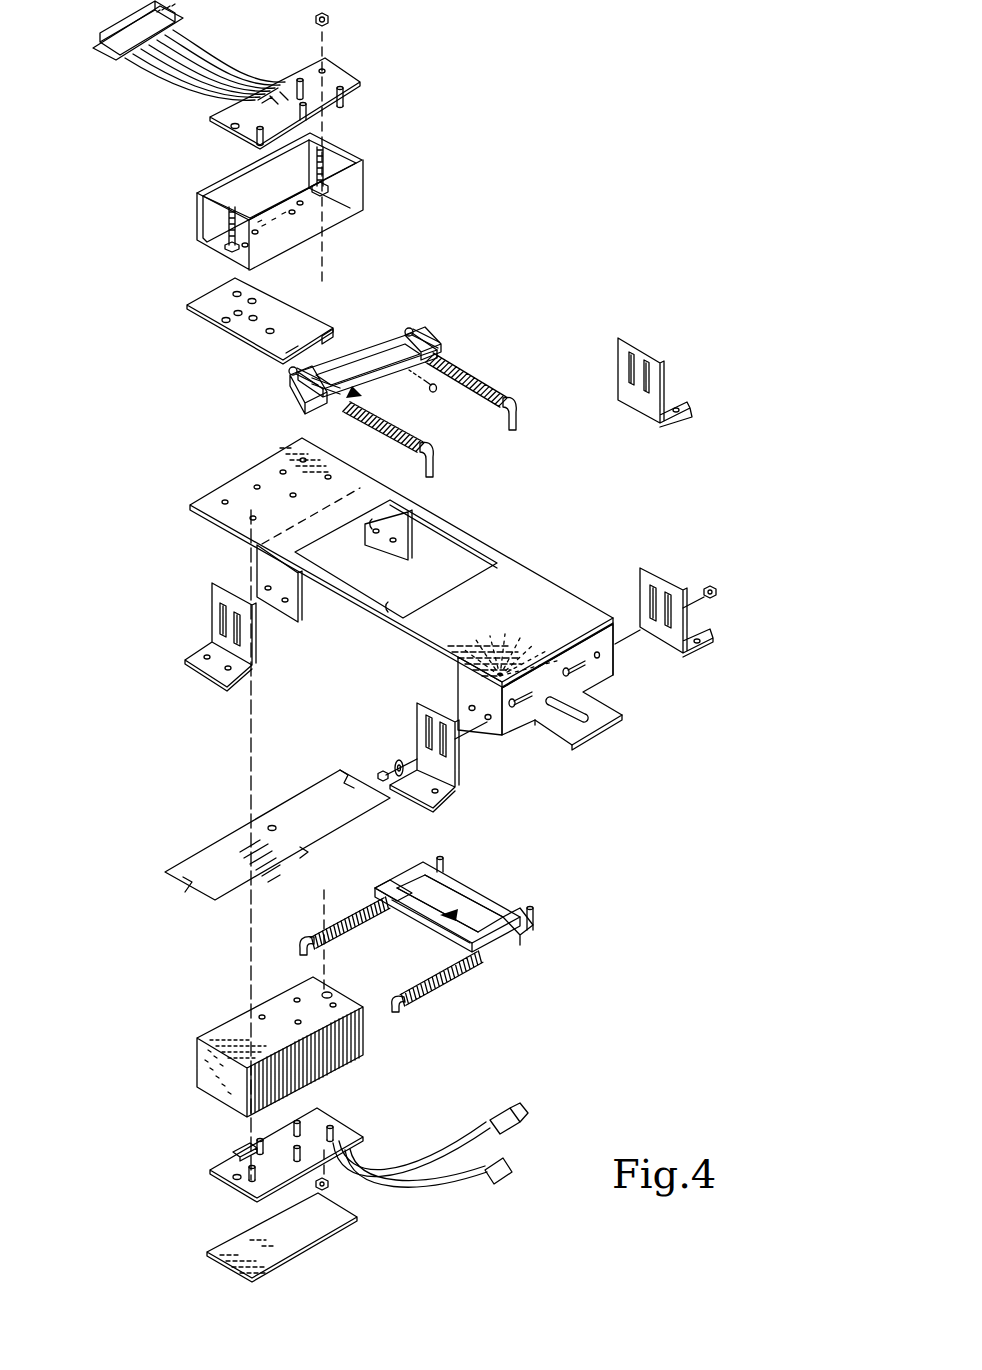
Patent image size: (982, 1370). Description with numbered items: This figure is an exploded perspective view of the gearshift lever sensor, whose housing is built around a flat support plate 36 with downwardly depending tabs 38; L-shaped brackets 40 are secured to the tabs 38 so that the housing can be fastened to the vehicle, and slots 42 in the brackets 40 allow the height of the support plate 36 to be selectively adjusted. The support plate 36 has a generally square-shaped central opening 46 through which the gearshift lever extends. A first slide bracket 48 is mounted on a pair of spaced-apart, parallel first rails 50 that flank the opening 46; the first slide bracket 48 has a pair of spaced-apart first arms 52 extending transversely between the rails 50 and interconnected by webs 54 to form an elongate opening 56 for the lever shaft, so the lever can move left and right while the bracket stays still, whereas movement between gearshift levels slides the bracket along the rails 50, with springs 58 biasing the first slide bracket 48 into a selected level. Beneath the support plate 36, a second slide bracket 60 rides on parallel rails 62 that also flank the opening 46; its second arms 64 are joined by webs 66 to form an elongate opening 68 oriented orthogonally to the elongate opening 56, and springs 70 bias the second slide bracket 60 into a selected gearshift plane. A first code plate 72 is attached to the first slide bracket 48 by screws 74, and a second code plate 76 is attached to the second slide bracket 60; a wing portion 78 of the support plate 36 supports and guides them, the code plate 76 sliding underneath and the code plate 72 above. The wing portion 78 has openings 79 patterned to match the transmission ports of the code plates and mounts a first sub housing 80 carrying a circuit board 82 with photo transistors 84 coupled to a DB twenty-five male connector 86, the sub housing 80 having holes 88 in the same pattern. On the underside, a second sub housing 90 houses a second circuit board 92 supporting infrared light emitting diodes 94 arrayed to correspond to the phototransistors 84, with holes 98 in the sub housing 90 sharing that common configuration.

The support plate 36 is at (527, 585).
The tabs 38 is at (408, 527).
The L-shaped brackets 40 is at (664, 394).
The slots 42 is at (633, 378).
The central opening 46 is at (450, 577).
The first slide bracket 48 is at (366, 340).
The first rails 50 is at (516, 414).
The first arms 52 is at (414, 345).
The webs 54 is at (412, 342).
The elongate opening 56 is at (300, 386).
The springs 58 is at (486, 382).
The second slide bracket 60 is at (458, 878).
The second rails 62 is at (420, 878).
The second arms 64 is at (492, 900).
The webs 66 is at (388, 882).
The elongate opening 68 is at (427, 916).
The springs 70 is at (318, 933).
The first code plate 72 is at (210, 310).
The screws 74 is at (434, 384).
The second code plate 76 is at (233, 838).
The wing portion 78 is at (207, 494).
The openings 79 is at (303, 460).
The first sub housing 80 is at (362, 180).
The circuit board 82 is at (332, 62).
The photo transistors 84 is at (297, 104).
The DB 25 male connector 86 is at (170, 18).
The holes 88 is at (314, 225).
The second sub housing 90 is at (210, 1073).
The second circuit board 92 is at (363, 1122).
The infrared light emitting diodes 94 is at (330, 1125).
The holes 98 is at (296, 998).